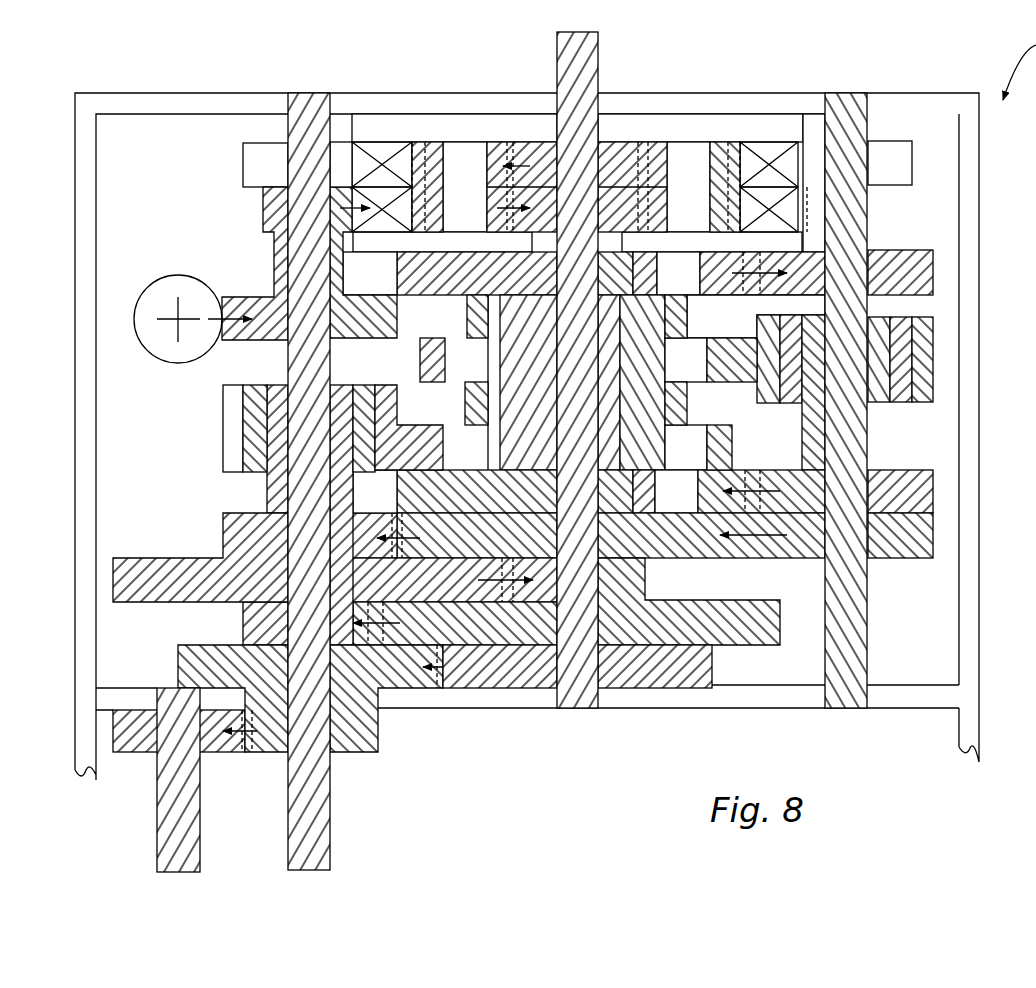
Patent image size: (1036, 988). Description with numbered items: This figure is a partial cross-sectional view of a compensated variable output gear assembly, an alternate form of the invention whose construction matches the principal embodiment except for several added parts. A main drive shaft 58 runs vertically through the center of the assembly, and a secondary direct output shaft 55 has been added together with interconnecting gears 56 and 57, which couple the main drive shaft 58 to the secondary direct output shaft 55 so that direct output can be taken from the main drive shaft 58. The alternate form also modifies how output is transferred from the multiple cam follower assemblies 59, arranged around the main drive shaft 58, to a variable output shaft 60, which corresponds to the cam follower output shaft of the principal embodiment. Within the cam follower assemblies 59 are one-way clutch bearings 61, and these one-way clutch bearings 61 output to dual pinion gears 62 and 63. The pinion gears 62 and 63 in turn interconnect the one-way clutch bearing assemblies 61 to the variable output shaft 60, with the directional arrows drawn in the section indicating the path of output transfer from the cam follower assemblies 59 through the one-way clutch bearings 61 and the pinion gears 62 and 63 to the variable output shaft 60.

The secondary direct output shaft 55 is at (183, 833).
The interconnecting gear 56 is at (363, 730).
The interconnecting gear 57 is at (512, 667).
The main drive shaft 58 is at (587, 58).
The cam follower assembly 59 is at (467, 315).
The variable output shaft 60 is at (318, 830).
The one-way clutch bearing 61 is at (253, 427).
The pinion gear 62 is at (235, 537).
The pinion gear 63 is at (623, 580).